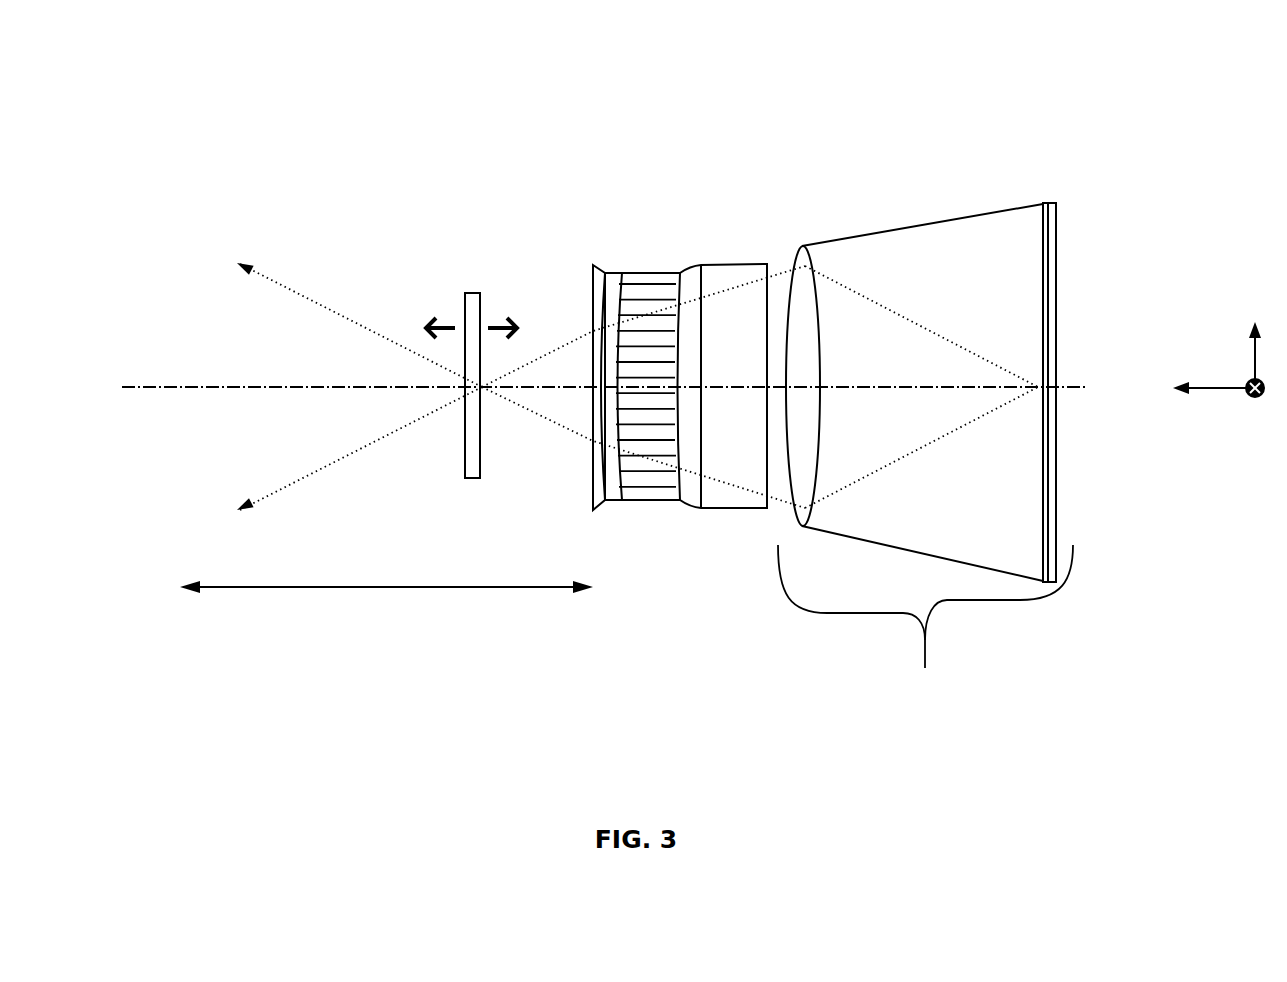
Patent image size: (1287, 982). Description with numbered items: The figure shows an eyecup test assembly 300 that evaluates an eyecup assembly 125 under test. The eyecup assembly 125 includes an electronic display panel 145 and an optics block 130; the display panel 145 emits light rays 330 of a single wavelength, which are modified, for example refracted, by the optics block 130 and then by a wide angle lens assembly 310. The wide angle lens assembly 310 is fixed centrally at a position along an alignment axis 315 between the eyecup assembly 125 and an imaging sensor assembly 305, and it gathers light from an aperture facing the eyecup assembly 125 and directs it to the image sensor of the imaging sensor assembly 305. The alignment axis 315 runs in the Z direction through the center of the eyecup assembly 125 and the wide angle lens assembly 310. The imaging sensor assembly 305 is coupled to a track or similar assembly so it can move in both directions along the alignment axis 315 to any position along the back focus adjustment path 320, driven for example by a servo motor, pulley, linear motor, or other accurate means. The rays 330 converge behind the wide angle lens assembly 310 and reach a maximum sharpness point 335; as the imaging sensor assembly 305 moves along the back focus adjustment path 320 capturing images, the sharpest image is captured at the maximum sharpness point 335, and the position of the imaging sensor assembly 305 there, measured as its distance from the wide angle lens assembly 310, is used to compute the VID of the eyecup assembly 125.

The eyecup test assembly 300 is at (218, 93).
The imaging sensor assembly 305 is at (472, 287).
The wide angle lens assembly 310 is at (653, 247).
The optics block 130 is at (797, 242).
The electronic display panel 145 is at (1063, 315).
The eyecup assembly 125 is at (925, 471).
The alignment axis 315 is at (165, 393).
The back focus adjustment path 320 is at (386, 628).
The rays 330 is at (867, 297).
The maximum sharpness point 335 is at (488, 395).